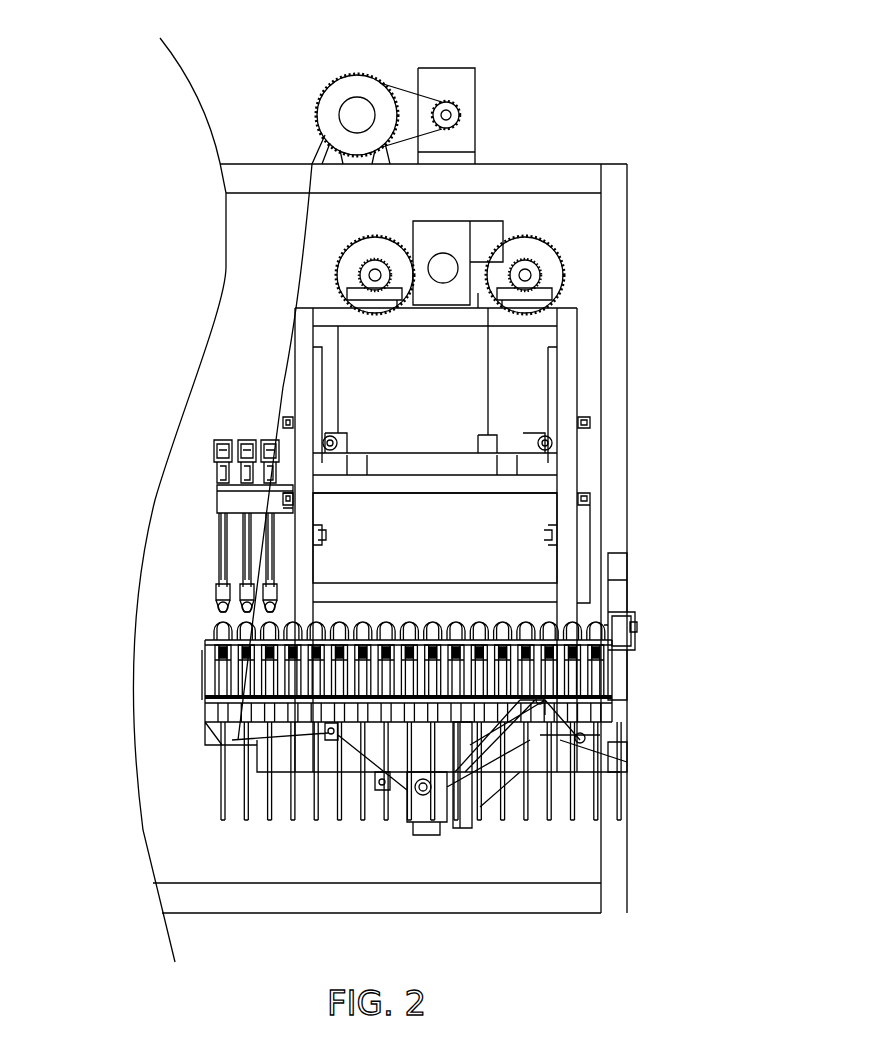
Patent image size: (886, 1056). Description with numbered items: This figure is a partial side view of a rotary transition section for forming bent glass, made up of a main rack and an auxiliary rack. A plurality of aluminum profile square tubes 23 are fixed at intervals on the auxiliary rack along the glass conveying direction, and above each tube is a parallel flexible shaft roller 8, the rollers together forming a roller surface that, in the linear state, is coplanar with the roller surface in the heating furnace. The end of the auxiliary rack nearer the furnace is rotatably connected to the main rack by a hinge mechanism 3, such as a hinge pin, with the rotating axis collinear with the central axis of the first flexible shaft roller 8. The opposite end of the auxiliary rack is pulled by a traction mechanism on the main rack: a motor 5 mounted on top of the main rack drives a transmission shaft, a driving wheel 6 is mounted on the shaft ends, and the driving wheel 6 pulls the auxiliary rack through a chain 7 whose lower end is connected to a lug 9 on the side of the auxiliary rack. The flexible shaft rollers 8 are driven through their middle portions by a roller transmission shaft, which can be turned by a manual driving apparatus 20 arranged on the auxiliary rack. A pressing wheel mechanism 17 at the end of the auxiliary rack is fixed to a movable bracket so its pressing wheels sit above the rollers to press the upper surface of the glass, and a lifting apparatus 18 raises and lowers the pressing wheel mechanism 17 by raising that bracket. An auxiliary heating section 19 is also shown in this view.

The hinge mechanism 3 is at (633, 635).
The motor 5 is at (466, 97).
The driving wheel 6 is at (350, 77).
The chain 7 is at (283, 383).
The flexible shaft roller 8 is at (222, 610).
The lug 9 is at (227, 743).
The pressing wheel mechanism 17 is at (222, 565).
The lifting apparatus 18 is at (522, 255).
The auxiliary heating section 19 is at (528, 485).
The manual driving apparatus 20 is at (580, 740).
The aluminum profile square tube 23 is at (208, 650).